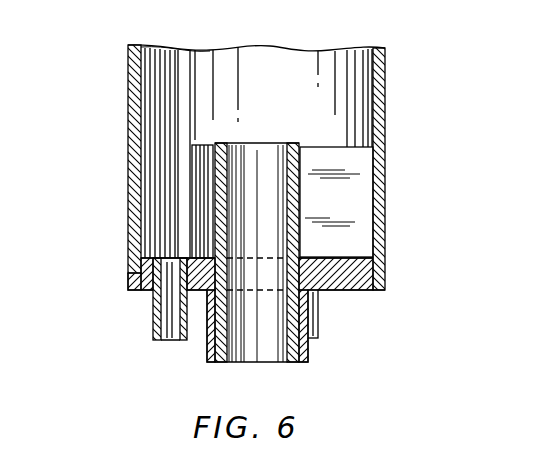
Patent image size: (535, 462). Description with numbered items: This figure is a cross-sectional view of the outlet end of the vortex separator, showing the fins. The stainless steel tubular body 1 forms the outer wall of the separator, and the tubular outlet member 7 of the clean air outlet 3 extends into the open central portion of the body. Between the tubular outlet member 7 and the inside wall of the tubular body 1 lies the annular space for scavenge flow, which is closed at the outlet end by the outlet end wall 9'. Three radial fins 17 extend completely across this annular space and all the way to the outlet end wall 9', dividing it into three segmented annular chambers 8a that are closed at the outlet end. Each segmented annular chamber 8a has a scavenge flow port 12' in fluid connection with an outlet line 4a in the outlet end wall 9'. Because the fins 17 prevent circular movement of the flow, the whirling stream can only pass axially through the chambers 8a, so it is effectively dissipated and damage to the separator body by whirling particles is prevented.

The tubular body 1 is at (130, 60).
The segmented annular chambers 8a is at (155, 165).
The radial fins 17 is at (200, 212).
The scavenge flow port 12' is at (227, 247).
The tubular outlet member 7 is at (300, 145).
The outlet end wall 9' is at (278, 274).
The outlet 3 is at (268, 315).
The outlet line 4a is at (165, 312).